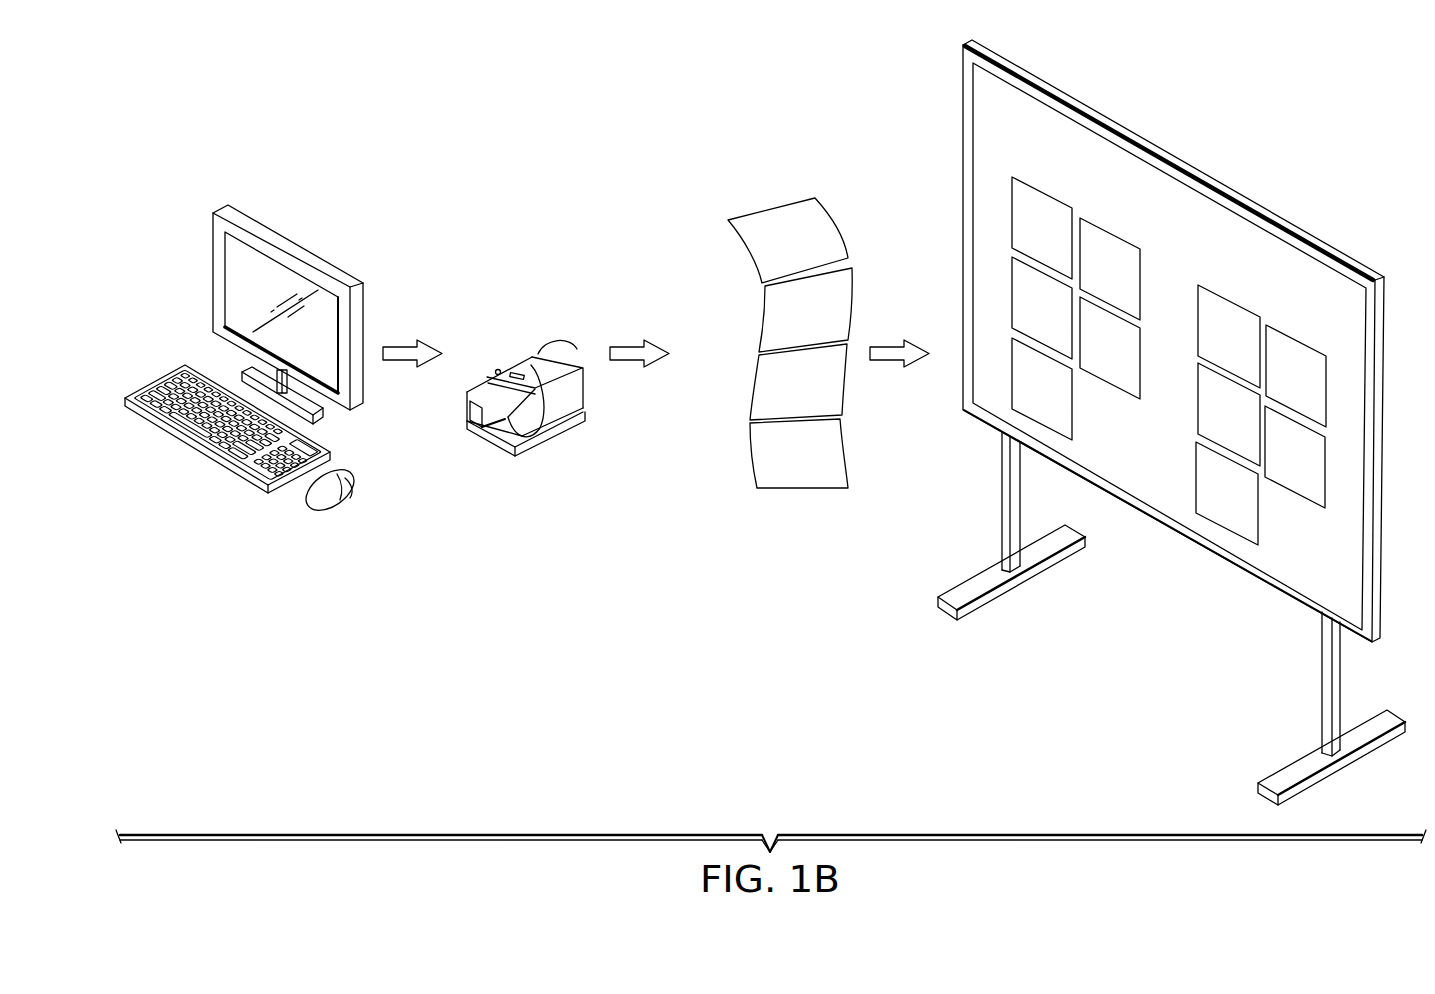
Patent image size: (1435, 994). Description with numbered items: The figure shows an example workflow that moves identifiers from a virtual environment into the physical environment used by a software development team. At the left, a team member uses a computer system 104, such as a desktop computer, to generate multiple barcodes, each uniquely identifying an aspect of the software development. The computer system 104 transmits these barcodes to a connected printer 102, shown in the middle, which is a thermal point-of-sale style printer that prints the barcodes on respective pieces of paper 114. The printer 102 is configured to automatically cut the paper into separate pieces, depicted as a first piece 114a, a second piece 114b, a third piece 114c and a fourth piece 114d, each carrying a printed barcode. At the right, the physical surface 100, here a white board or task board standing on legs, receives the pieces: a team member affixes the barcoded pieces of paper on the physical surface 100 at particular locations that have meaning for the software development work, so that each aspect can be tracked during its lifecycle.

The physical surface 100 is at (1175, 163).
The printer 102 is at (508, 362).
The computer system 104 is at (287, 248).
The pieces of paper 114 is at (760, 320).
The first piece 114a is at (755, 245).
The second piece 114b is at (772, 313).
The third piece 114c is at (758, 387).
The fourth piece 114d is at (760, 455).